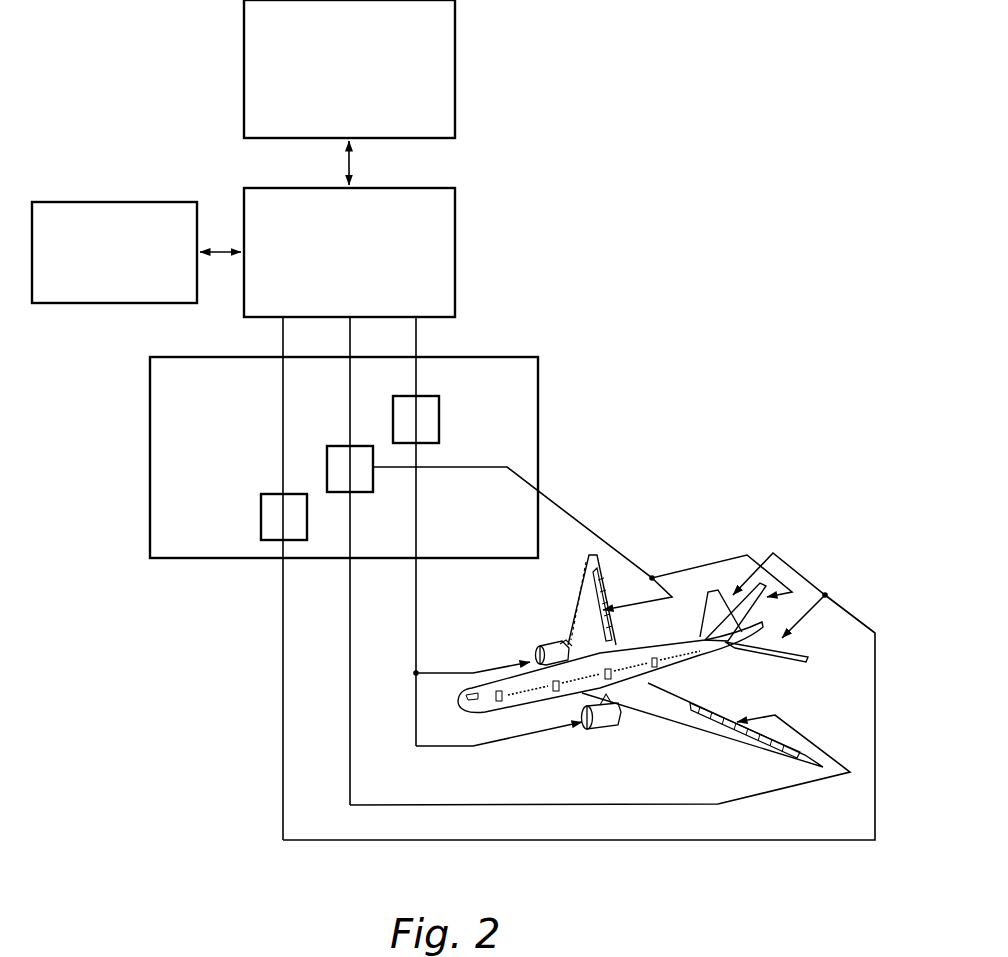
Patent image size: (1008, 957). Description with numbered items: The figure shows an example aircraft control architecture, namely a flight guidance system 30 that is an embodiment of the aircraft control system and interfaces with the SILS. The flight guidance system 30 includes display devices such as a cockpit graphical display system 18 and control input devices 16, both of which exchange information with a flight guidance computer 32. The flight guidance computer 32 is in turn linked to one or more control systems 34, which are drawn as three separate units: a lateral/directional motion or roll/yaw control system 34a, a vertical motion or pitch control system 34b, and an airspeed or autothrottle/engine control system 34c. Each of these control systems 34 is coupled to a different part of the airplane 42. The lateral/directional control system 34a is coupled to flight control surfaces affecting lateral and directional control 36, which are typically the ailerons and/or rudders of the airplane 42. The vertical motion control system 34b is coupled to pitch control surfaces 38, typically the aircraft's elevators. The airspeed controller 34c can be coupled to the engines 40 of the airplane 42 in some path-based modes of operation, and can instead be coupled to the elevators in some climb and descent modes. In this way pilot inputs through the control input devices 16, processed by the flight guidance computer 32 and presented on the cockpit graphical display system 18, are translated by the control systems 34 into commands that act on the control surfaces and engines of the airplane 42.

The control input devices 16 is at (90, 202).
The cockpit graphical display system 18 is at (455, 30).
The flight guidance system 30 is at (648, 76).
The flight guidance computer 32 is at (455, 218).
The control systems 34 is at (515, 357).
The lateral/directional motion or roll/yaw control system 34a is at (333, 446).
The vertical motion or pitch control system 34b is at (266, 494).
The airspeed control system 34c is at (439, 416).
The flight control surfaces affecting lateral and directional control 36 is at (612, 606).
The pitch control surfaces 38 is at (737, 592).
The engines 40 is at (541, 647).
The airplane 42 is at (581, 747).